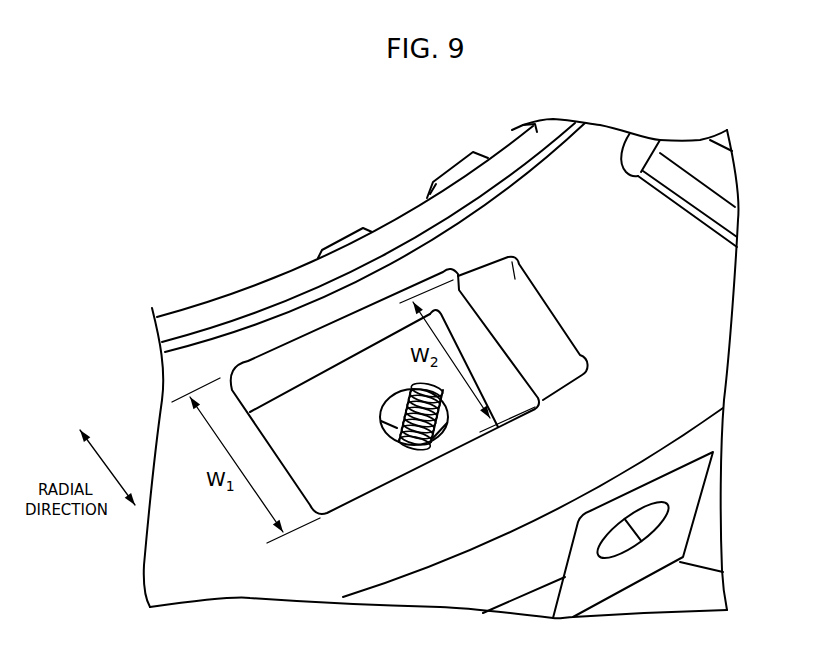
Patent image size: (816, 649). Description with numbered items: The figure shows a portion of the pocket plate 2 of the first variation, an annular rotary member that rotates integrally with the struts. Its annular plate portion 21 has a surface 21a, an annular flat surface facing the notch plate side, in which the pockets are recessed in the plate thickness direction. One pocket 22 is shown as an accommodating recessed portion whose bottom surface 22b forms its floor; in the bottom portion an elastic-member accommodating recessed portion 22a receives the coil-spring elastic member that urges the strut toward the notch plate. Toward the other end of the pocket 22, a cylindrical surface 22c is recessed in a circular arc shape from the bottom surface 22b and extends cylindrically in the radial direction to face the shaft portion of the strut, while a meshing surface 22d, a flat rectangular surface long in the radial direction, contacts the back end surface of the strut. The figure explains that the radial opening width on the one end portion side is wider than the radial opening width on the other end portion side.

The pocket plate 2 is at (345, 203).
The plate portion 21 is at (187, 303).
The surface 21a is at (718, 306).
The pocket 22 is at (270, 347).
The elastic-member accommodating recessed portion 22a is at (393, 407).
The bottom surface 22b is at (337, 442).
The cylindrical surface 22c is at (487, 294).
The meshing surface 22d is at (543, 307).